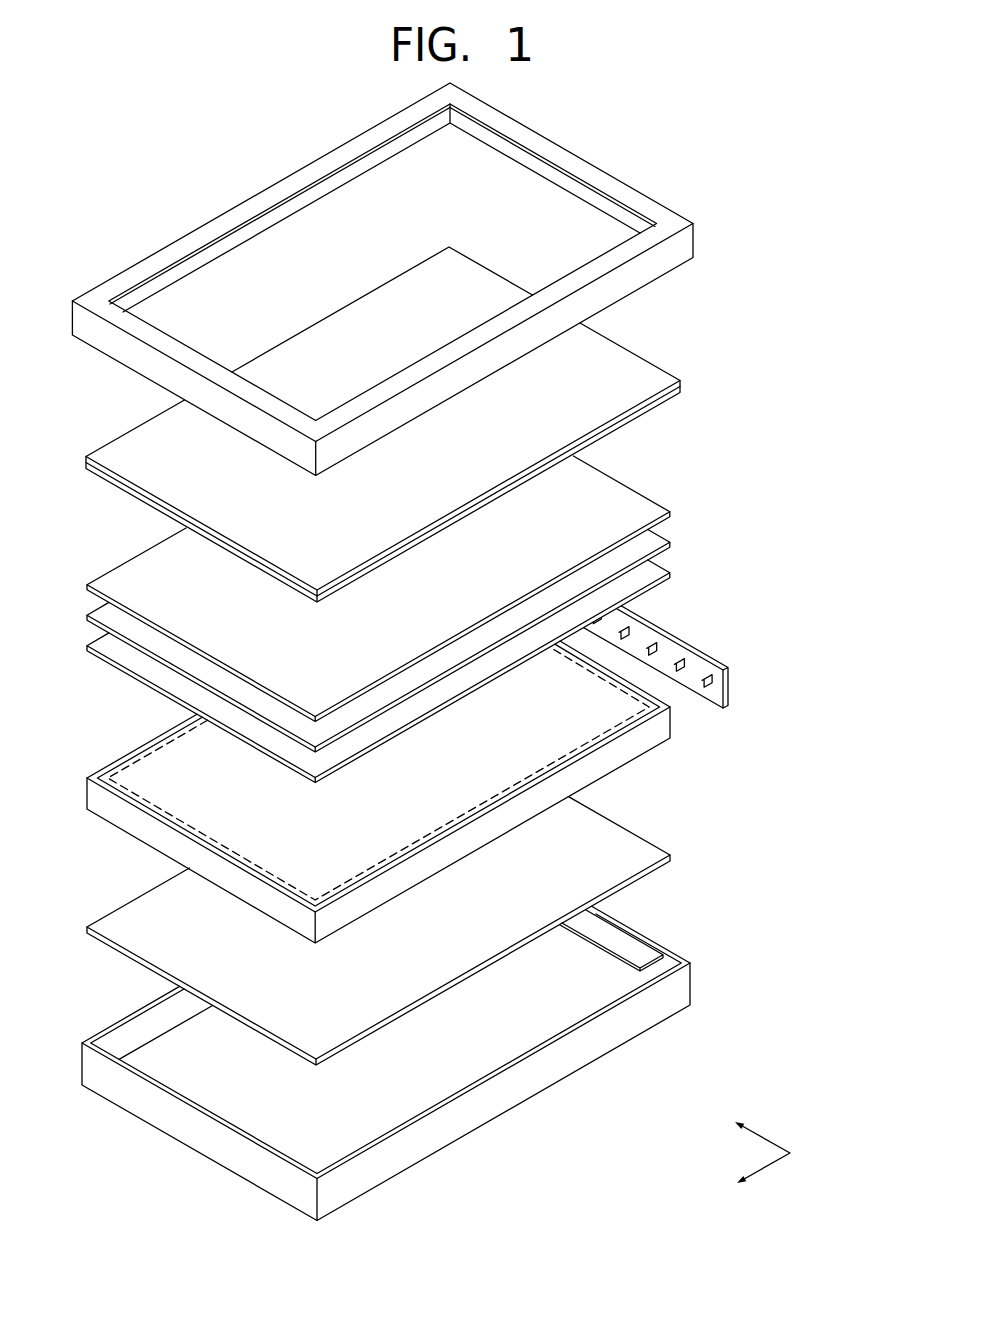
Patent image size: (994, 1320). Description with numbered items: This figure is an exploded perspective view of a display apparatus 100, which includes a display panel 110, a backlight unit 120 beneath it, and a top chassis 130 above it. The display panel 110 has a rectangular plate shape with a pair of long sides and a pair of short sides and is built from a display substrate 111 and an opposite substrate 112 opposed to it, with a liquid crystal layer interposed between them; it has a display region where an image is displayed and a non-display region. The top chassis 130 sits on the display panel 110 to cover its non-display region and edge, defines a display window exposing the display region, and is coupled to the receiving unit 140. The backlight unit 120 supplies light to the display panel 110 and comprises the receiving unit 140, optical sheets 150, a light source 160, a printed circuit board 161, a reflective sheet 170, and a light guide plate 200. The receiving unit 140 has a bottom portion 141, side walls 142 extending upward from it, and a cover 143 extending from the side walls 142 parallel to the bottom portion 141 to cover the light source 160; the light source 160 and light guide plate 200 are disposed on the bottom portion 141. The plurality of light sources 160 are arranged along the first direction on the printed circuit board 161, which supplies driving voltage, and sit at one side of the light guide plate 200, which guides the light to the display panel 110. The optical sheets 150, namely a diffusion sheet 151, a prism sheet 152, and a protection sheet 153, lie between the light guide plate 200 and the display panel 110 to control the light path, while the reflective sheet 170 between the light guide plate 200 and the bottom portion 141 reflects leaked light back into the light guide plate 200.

The display apparatus 100 is at (592, 128).
The display panel 110 is at (446, 424).
The display substrate 111 is at (677, 392).
The opposite substrate 112 is at (658, 378).
The backlight unit 120 is at (468, 838).
The top chassis 130 is at (678, 255).
The receiving unit 140 is at (444, 1059).
The bottom portion 141 is at (627, 985).
The side walls 142 is at (678, 993).
The cover 143 is at (607, 932).
The optical sheets 150 is at (447, 619).
The diffusion sheet 151 is at (654, 571).
The prism sheet 152 is at (654, 543).
The protection sheet 153 is at (654, 513).
The light source 160 is at (648, 621).
The printed circuit board 161 is at (684, 646).
The reflective sheet 170 is at (644, 853).
The light guide plate 200 is at (676, 728).